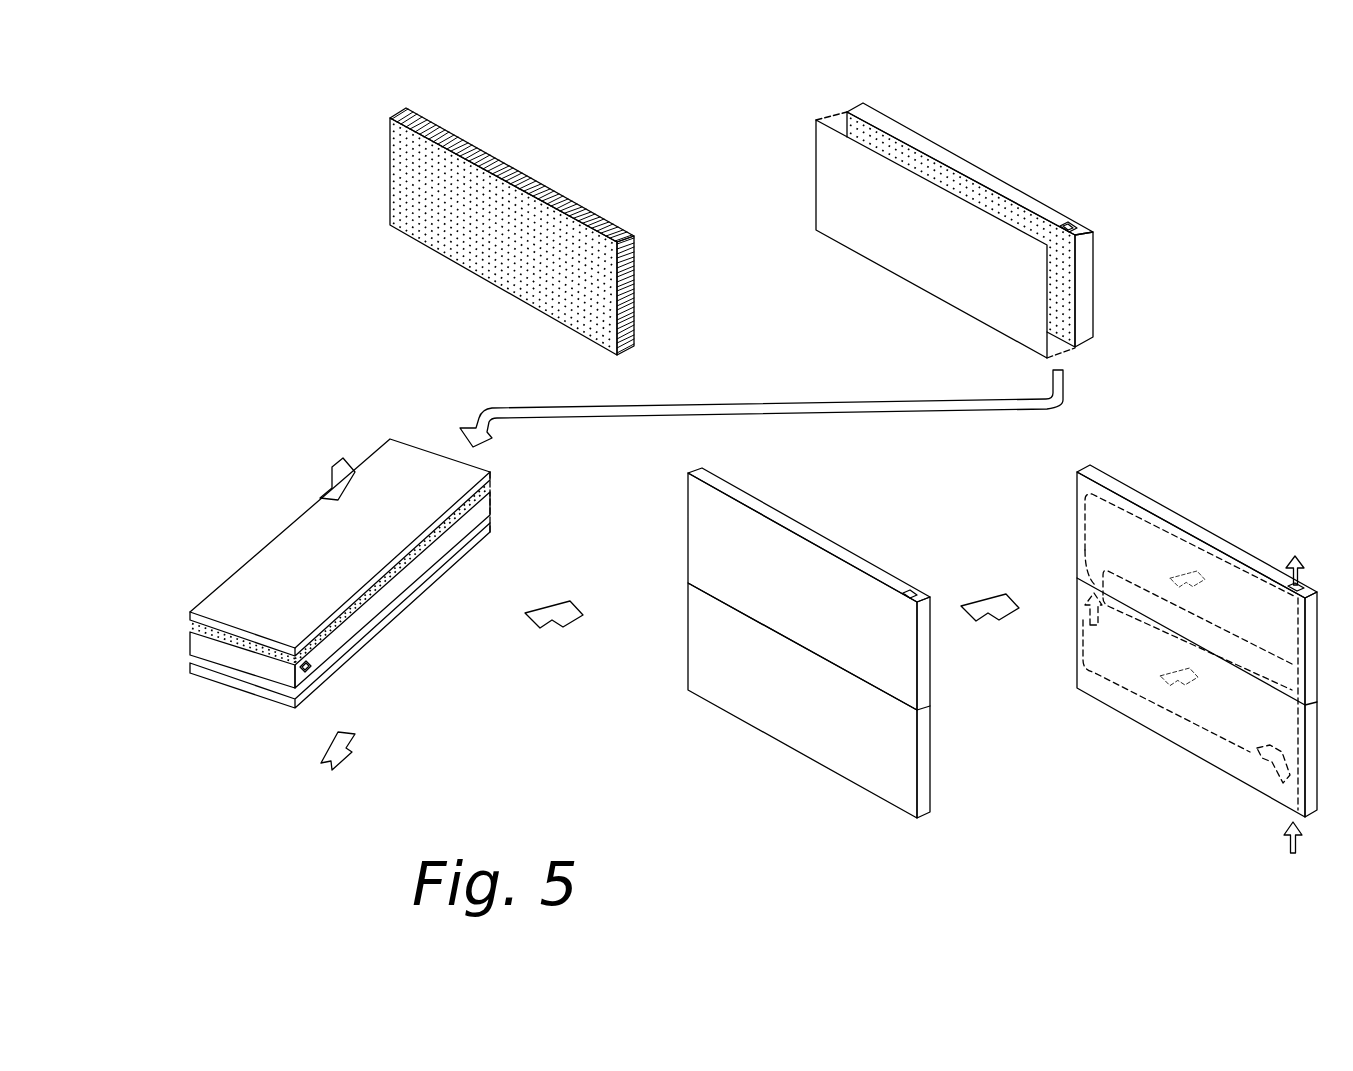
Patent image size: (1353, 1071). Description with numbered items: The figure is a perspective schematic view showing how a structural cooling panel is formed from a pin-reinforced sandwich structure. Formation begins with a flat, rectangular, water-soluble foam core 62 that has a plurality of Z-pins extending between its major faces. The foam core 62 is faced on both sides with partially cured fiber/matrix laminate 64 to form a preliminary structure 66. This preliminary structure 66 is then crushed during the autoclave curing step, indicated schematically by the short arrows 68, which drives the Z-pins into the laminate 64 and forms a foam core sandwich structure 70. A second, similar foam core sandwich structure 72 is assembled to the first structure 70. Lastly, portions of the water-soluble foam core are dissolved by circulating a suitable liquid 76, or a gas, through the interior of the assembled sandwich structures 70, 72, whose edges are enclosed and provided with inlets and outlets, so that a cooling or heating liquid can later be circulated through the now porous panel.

The foam core 62 is at (435, 123).
The fiber/matrix laminate 64 is at (1041, 213).
The preliminary structure 66 is at (978, 132).
The short arrows 68 is at (343, 458).
The foam core sandwich structure 70 is at (805, 533).
The second foam core sandwich structure 72 is at (785, 716).
The liquid 76 is at (1200, 572).